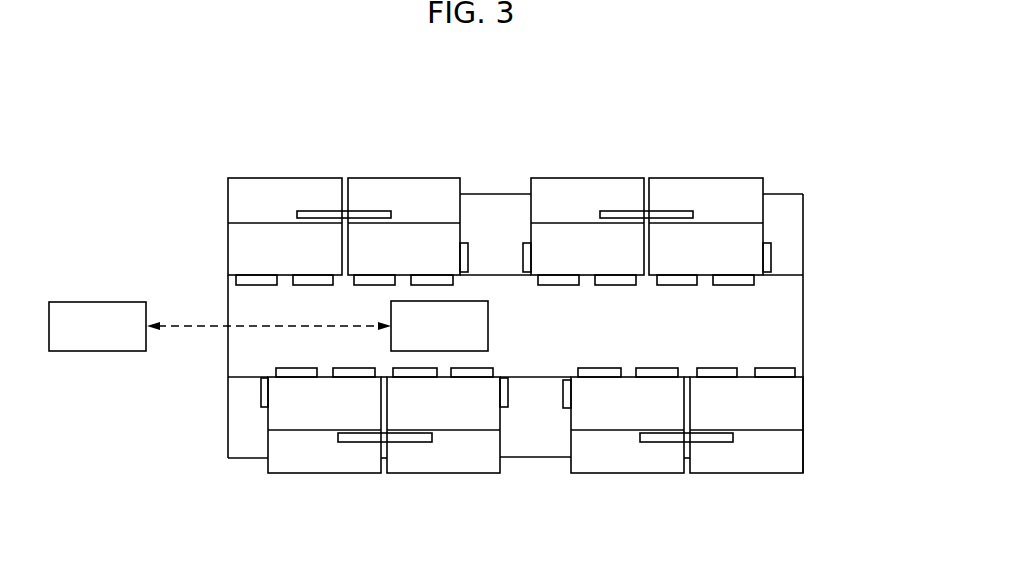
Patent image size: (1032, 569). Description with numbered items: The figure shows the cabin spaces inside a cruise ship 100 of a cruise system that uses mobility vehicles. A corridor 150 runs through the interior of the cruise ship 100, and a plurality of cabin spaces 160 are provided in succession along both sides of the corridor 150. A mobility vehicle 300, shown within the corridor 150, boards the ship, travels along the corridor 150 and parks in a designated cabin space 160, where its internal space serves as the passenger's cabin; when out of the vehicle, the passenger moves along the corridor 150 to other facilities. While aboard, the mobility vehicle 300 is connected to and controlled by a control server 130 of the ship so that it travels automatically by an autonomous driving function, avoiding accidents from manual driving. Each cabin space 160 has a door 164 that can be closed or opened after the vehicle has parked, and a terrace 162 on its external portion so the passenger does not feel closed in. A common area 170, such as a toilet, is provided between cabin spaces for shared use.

The cruise ship 100 is at (781, 152).
The control server 130 is at (97, 352).
The corridor 150 is at (787, 320).
The cabin space 160 is at (784, 408).
The terrace 162 is at (790, 455).
The door 164 is at (795, 372).
The common area 170 is at (539, 444).
The mobility vehicle 300 is at (425, 323).